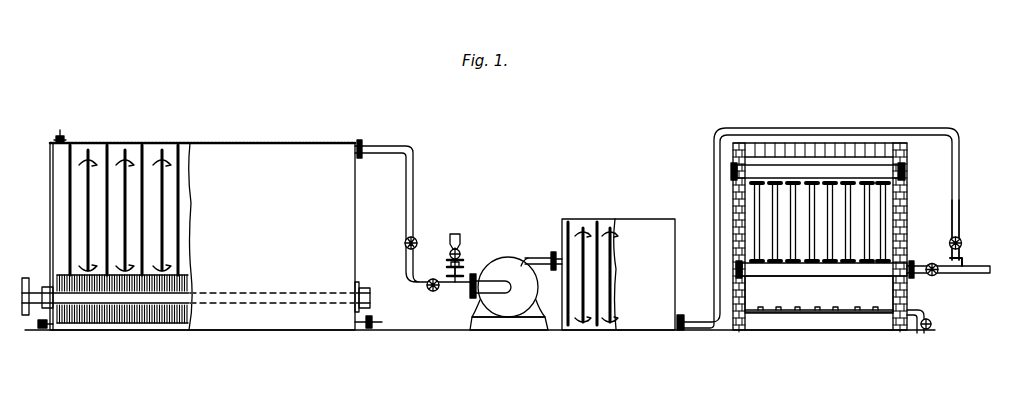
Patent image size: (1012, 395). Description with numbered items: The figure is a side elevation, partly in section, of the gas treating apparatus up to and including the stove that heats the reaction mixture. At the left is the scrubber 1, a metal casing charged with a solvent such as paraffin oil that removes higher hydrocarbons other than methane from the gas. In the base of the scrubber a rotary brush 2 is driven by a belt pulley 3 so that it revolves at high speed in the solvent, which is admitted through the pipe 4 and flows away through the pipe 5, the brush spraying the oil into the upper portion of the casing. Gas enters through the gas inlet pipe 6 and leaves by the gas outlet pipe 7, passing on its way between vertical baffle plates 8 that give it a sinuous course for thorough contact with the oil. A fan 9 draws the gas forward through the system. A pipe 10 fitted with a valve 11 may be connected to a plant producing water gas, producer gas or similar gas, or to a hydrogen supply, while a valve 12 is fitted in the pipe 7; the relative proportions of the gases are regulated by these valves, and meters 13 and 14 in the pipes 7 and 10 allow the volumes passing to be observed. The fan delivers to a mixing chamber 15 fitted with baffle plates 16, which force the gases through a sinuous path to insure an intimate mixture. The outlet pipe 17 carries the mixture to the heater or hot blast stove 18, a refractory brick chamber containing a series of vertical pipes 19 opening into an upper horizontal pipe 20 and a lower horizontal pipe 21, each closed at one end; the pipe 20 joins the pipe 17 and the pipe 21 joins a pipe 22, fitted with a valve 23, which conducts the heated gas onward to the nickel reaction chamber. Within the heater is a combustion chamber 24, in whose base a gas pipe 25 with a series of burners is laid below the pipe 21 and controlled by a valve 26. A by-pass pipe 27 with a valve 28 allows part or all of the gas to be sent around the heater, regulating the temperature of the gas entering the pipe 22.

The scrubber 1 is at (50, 210).
The rotary brush 2 is at (96, 320).
The belt pulley 3 is at (22, 284).
The solvent inlet pipe 4 is at (370, 329).
The solvent outlet pipe 5 is at (45, 328).
The gas inlet pipe 6 is at (61, 134).
The gas outlet pipe 7 is at (373, 153).
The vertical baffle plates 8 is at (142, 196).
The fan 9 is at (516, 291).
The pipe 10 is at (466, 241).
The valve 11 is at (462, 267).
The valve 12 is at (433, 279).
The meter 13 is at (405, 243).
The meter 14 is at (451, 252).
The mixing chamber 15 is at (562, 288).
The baffle plates 16 is at (596, 248).
The outlet pipe 17 is at (712, 308).
The heater or hot blast stove 18 is at (734, 218).
The vertical pipes 19 is at (830, 223).
The upper horizontal pipe 20 is at (818, 172).
The lower horizontal pipe 21 is at (808, 276).
The pipe 22 is at (944, 274).
The valve 23 is at (928, 275).
The combustion chamber 24 is at (819, 294).
The gas pipe 25 is at (808, 316).
The valve 26 is at (936, 322).
The by-pass pipe 27 is at (959, 164).
The valve 28 is at (964, 244).